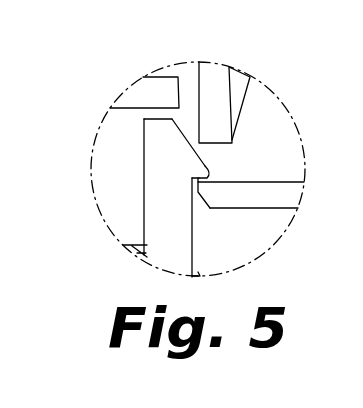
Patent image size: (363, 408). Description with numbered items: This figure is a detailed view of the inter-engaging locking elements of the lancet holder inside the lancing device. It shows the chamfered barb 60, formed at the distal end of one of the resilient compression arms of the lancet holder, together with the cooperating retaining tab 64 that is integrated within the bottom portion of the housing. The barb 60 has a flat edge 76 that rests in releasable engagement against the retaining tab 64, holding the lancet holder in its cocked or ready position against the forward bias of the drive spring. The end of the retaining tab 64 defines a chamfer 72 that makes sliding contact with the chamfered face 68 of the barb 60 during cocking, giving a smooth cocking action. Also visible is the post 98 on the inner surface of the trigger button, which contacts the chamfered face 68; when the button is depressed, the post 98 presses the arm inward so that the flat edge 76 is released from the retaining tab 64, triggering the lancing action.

The chamfered barb 60 is at (158, 188).
The retaining tab 64 is at (225, 195).
The chamfered face 68 is at (186, 127).
The chamfer 72 is at (201, 206).
The flat edge 76 is at (200, 172).
The post 98 is at (212, 78).